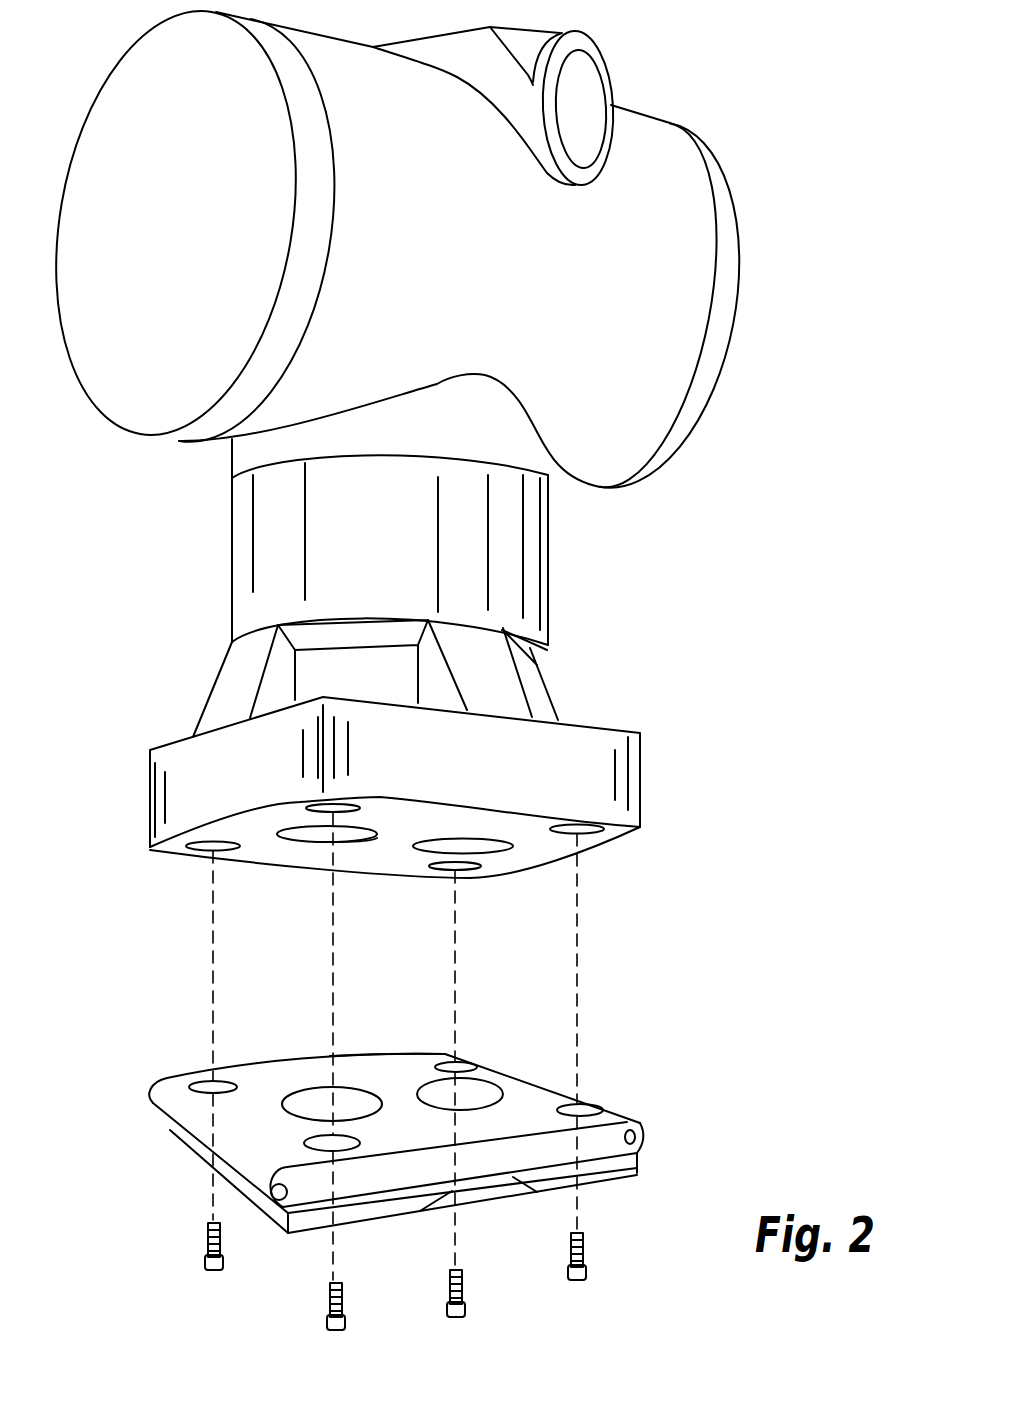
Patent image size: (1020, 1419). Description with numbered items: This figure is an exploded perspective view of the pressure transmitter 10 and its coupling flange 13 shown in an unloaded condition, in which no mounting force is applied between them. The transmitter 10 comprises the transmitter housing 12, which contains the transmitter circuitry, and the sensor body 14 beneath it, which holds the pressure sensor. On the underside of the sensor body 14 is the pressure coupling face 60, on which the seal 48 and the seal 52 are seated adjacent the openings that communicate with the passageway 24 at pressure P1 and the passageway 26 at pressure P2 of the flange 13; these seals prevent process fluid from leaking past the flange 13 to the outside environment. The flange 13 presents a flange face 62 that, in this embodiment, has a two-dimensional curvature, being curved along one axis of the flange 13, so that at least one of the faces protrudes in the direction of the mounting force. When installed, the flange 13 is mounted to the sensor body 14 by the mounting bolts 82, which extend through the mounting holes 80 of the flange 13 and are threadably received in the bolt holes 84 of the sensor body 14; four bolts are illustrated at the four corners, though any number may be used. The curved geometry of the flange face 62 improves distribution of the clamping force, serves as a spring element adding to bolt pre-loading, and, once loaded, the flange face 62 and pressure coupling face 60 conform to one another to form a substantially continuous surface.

The pressure transmitter 10 is at (775, 124).
The transmitter housing 12 is at (617, 440).
The coupling flange 13 is at (177, 1074).
The sensor body 14 is at (505, 695).
The passageway 24 is at (455, 1095).
The passageway 26 is at (320, 1107).
The seal 48 is at (307, 832).
The seal 52 is at (442, 843).
The pressure coupling face 60 is at (365, 858).
The flange face 62 is at (372, 1068).
The mounting holes 80 is at (575, 1106).
The mounting bolts 82 is at (328, 1298).
The bolt holes 84 is at (220, 843).